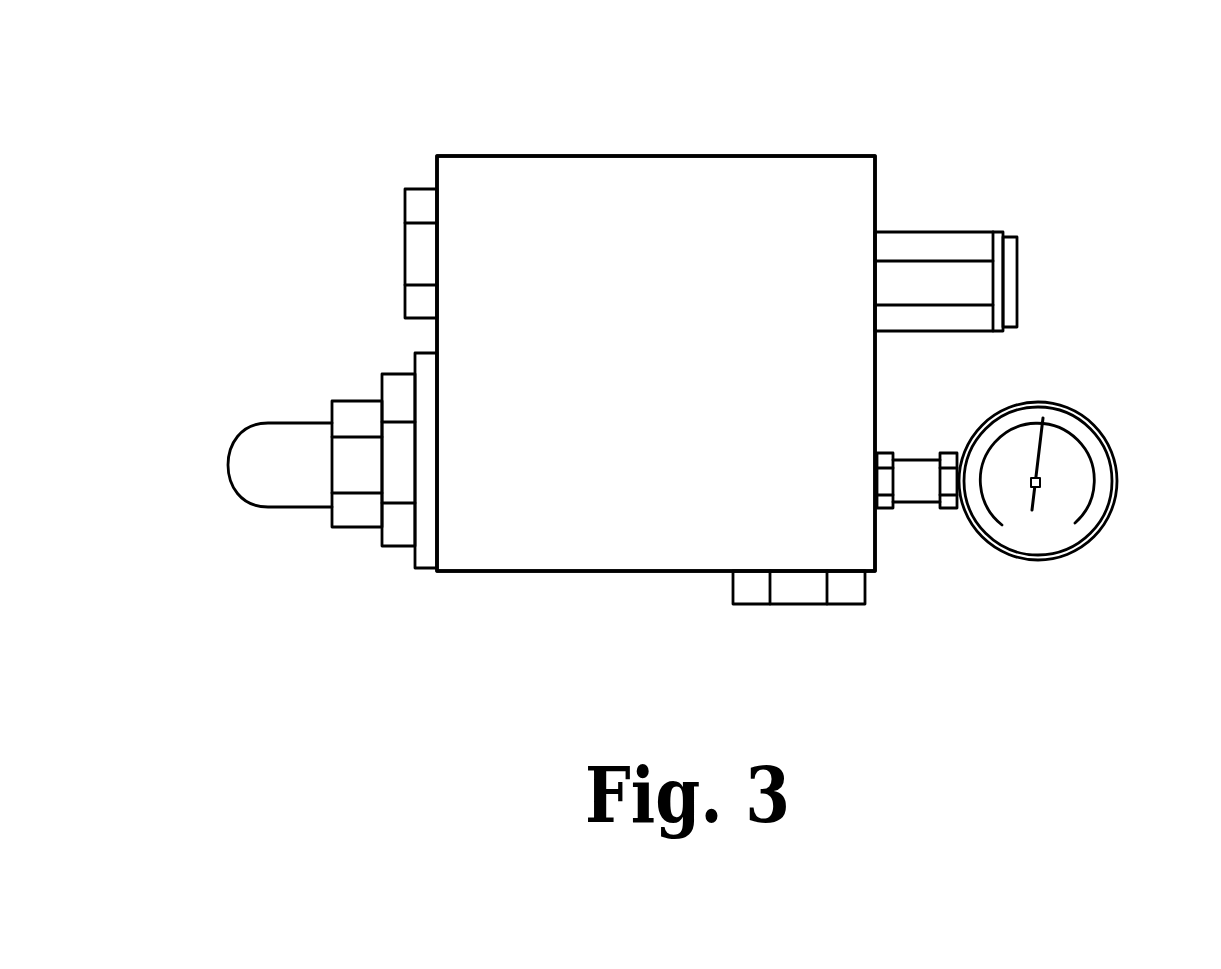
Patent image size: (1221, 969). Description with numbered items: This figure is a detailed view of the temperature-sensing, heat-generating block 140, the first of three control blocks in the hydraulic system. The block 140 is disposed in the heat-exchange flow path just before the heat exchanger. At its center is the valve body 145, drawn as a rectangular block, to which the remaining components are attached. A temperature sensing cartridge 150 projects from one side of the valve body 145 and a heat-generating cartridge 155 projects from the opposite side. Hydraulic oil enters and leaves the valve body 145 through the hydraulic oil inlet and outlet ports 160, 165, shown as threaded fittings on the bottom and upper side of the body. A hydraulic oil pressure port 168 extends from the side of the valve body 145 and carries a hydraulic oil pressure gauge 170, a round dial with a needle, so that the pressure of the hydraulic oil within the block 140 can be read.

The temperature-sensing, heat-generating block 140 is at (573, 128).
The valve body 145 is at (780, 185).
The temperature sensing cartridge 150 is at (275, 485).
The heat-generating cartridge 155 is at (967, 280).
The hydraulic oil inlet port 160 is at (795, 592).
The hydraulic oil outlet port 165 is at (428, 258).
The hydraulic oil pressure port 168 is at (893, 487).
The hydraulic oil pressure gauge 170 is at (1075, 485).